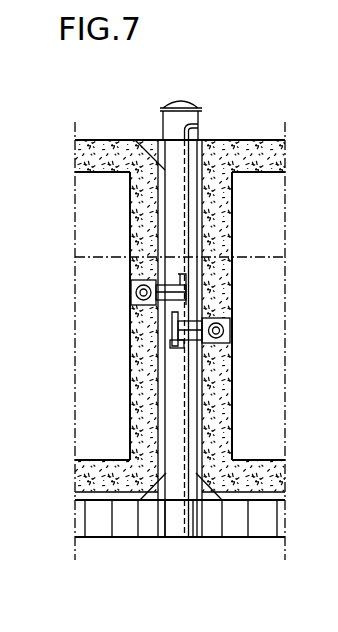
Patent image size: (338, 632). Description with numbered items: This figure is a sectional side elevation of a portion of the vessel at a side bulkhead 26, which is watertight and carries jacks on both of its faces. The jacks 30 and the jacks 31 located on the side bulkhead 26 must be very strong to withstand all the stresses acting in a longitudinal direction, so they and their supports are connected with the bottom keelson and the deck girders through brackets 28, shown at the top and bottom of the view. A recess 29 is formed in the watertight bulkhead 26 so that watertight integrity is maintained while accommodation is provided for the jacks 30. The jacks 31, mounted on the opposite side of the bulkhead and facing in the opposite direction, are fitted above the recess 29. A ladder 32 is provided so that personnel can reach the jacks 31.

The side bulkhead 26 is at (195, 411).
The brackets 28 is at (194, 170).
The recess 29 is at (176, 347).
The jacks 30 is at (192, 331).
The jacks 31 is at (171, 292).
The ladder 32 is at (195, 215).